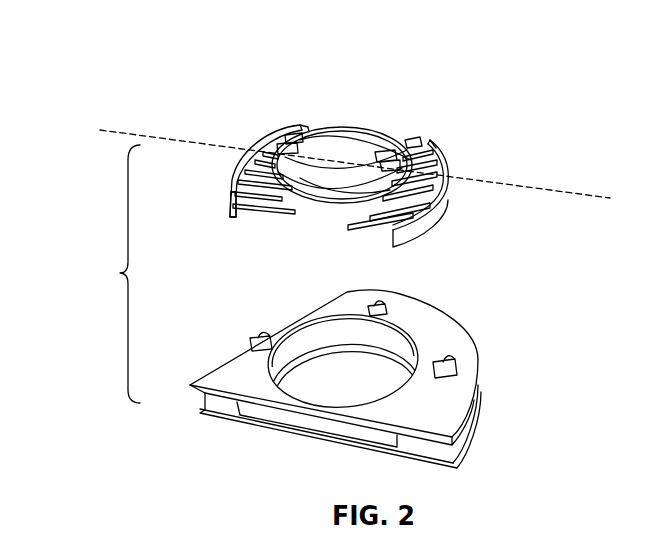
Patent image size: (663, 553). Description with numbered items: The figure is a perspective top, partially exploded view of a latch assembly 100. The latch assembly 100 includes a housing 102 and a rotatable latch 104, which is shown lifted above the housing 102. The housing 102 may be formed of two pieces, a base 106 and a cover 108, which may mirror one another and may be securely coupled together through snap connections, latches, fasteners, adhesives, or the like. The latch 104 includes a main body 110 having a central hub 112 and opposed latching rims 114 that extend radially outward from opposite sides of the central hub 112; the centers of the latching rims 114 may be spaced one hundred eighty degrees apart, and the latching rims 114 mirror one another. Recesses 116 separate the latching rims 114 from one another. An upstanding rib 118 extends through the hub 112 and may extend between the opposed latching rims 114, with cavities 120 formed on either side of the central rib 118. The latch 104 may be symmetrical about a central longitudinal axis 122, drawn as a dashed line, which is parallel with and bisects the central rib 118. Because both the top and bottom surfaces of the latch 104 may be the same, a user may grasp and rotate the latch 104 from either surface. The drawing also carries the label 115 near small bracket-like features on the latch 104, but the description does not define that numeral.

The latch assembly 100 is at (120, 273).
The housing 102 is at (376, 381).
The latch 104 is at (357, 164).
The base 106 is at (454, 467).
The cover 108 is at (414, 320).
The main body 110 is at (317, 124).
The central hub 112 is at (380, 137).
The latching rims 114 is at (250, 150).
The bracket 115 is at (278, 140).
The recesses 116 is at (360, 126).
The upstanding rib 118 is at (231, 203).
The cavities 120 is at (340, 147).
The central longitudinal axis 122 is at (118, 128).